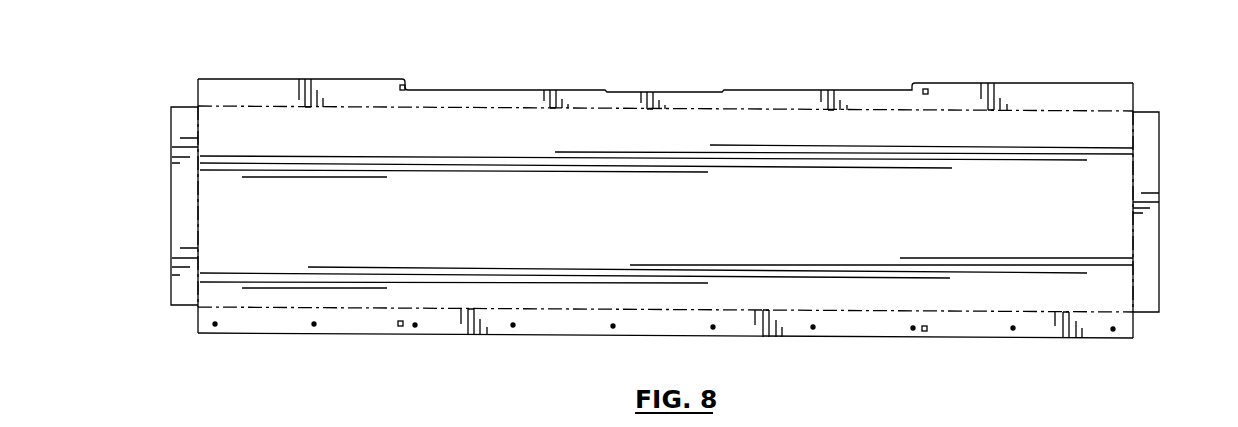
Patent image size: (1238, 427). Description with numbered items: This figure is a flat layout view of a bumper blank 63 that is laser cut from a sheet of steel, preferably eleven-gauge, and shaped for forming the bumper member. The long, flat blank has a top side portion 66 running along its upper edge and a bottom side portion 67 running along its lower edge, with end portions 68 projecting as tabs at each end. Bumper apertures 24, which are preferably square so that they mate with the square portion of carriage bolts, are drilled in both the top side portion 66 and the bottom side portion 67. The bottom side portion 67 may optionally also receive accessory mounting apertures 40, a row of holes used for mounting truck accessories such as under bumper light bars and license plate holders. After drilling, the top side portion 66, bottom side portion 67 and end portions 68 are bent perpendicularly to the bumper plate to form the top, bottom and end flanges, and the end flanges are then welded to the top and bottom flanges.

The bumper apertures 24 is at (406, 84).
The accessory mounting apertures 40 is at (612, 328).
The bumper blank 63 is at (845, 86).
The top side portion 66 is at (268, 92).
The bottom side portion 67 is at (251, 320).
The end portions 68 is at (180, 185).